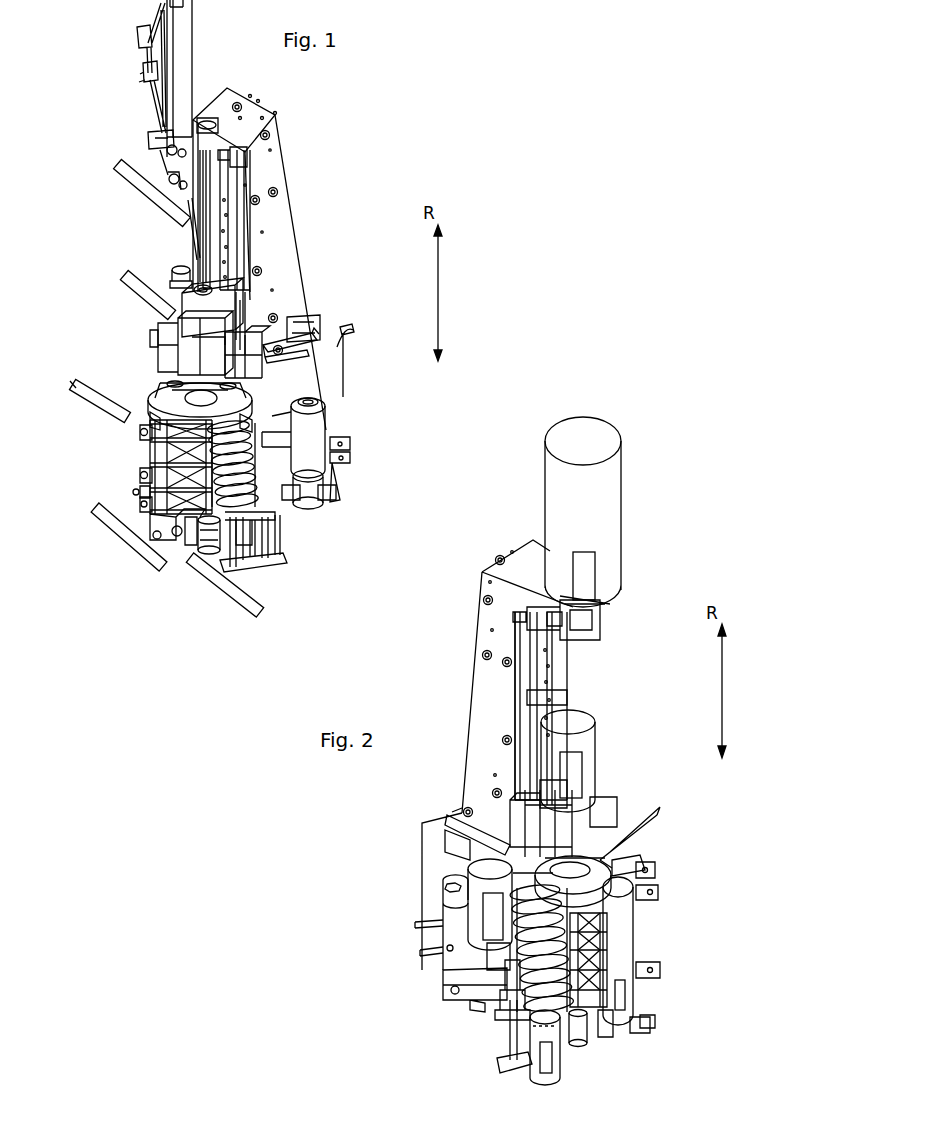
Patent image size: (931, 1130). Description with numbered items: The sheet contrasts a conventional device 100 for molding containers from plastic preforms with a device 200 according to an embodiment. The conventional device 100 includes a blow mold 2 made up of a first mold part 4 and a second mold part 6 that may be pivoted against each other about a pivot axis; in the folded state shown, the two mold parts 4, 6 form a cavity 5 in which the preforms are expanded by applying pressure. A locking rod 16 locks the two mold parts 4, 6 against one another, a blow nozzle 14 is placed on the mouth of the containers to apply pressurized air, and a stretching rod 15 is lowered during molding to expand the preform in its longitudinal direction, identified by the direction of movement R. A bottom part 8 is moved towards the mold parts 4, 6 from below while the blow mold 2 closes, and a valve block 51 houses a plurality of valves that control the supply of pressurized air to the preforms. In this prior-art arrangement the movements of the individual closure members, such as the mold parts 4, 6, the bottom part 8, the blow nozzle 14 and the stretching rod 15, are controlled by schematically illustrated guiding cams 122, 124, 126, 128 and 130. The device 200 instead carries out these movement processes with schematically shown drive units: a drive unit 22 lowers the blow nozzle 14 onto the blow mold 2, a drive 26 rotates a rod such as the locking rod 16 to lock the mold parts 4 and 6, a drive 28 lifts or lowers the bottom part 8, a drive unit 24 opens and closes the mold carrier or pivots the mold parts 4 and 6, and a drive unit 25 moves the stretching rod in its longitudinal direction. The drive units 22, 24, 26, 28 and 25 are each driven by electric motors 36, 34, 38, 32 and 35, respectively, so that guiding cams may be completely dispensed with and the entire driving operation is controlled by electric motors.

In FIG. 1, the conventional device 100 is at (313, 220).
In FIG. 2, the device 200 is at (721, 590).
In FIG. 1, the blow mold 2 is at (132, 448).
In FIG. 2, the blow mold 2 is at (657, 866).
In FIG. 1, the first mold part 4 is at (275, 508).
In FIG. 2, the first mold part 4 is at (597, 873).
In FIG. 1, the cavity 5 is at (233, 390).
In FIG. 2, the cavity 5 is at (575, 876).
In FIG. 1, the second mold part 6 is at (157, 400).
In FIG. 2, the second mold part 6 is at (537, 970).
In FIG. 1, the bottom part 8 is at (268, 562).
In FIG. 2, the bottom part 8 is at (583, 1017).
In FIG. 1, the blow nozzle 14 is at (175, 383).
In FIG. 2, the blow nozzle 14 is at (580, 870).
In FIG. 1, the stretching rod 15 is at (188, 253).
In FIG. 2, the stretching rod 15 is at (565, 688).
In FIG. 1, the locking rod 16 is at (138, 490).
In FIG. 2, the drive unit 22 is at (573, 783).
In FIG. 2, the drive unit 24 is at (493, 915).
In FIG. 2, the drive unit 25 is at (588, 582).
In FIG. 2, the drive 26 is at (633, 995).
In FIG. 2, the drive 28 is at (550, 1057).
In FIG. 2, the electric motor 32 is at (567, 743).
In FIG. 2, the electric motor 34 is at (478, 883).
In FIG. 2, the electric motor 35 is at (585, 515).
In FIG. 2, the electric motor 36 is at (623, 922).
In FIG. 2, the electric motor 38 is at (547, 1033).
In FIG. 1, the valve block 51 is at (213, 360).
In FIG. 1, the guiding cam 122 is at (100, 412).
In FIG. 1, the guiding cam 124 is at (150, 313).
In FIG. 1, the guiding cam 126 is at (240, 598).
In FIG. 1, the guiding cam 128 is at (118, 532).
In FIG. 1, the guiding cam 130 is at (156, 207).